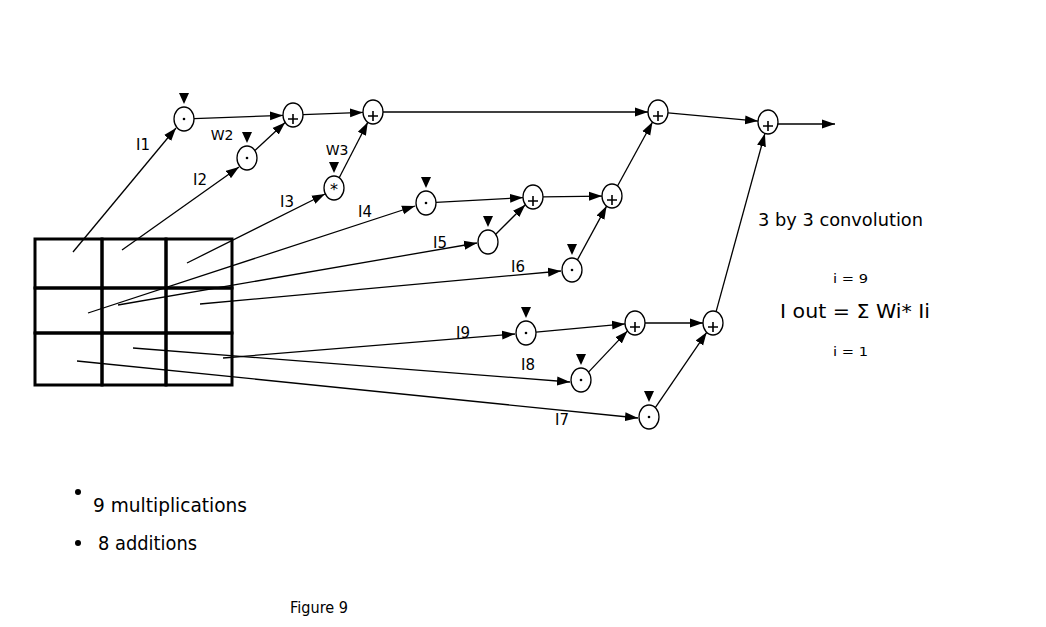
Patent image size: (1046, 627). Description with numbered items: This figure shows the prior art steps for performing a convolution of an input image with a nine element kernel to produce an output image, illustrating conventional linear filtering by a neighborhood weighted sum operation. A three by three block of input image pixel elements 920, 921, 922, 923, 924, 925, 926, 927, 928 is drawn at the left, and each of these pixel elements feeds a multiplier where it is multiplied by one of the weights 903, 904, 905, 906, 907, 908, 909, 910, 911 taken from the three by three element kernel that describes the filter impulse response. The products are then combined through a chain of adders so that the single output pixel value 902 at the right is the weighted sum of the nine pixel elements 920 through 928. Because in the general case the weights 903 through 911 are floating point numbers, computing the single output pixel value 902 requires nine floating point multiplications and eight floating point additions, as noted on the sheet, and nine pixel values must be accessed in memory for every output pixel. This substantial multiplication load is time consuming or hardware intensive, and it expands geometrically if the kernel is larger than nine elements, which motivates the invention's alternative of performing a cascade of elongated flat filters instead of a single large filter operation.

The output pixel value 902 is at (888, 112).
The weight 903 is at (188, 66).
The weight 904 is at (228, 120).
The weight 905 is at (330, 140).
The weight 906 is at (418, 160).
The weight 907 is at (485, 205).
The weight 908 is at (588, 228).
The weight 909 is at (660, 388).
The weight 910 is at (585, 335).
The weight 911 is at (510, 298).
The pixel element 920 is at (115, 112).
The pixel element 921 is at (134, 263).
The pixel element 922 is at (199, 263).
The pixel element 923 is at (68, 310).
The pixel element 924 is at (134, 310).
The pixel element 925 is at (199, 310).
The pixel element 926 is at (68, 359).
The pixel element 927 is at (134, 359).
The pixel element 928 is at (199, 359).